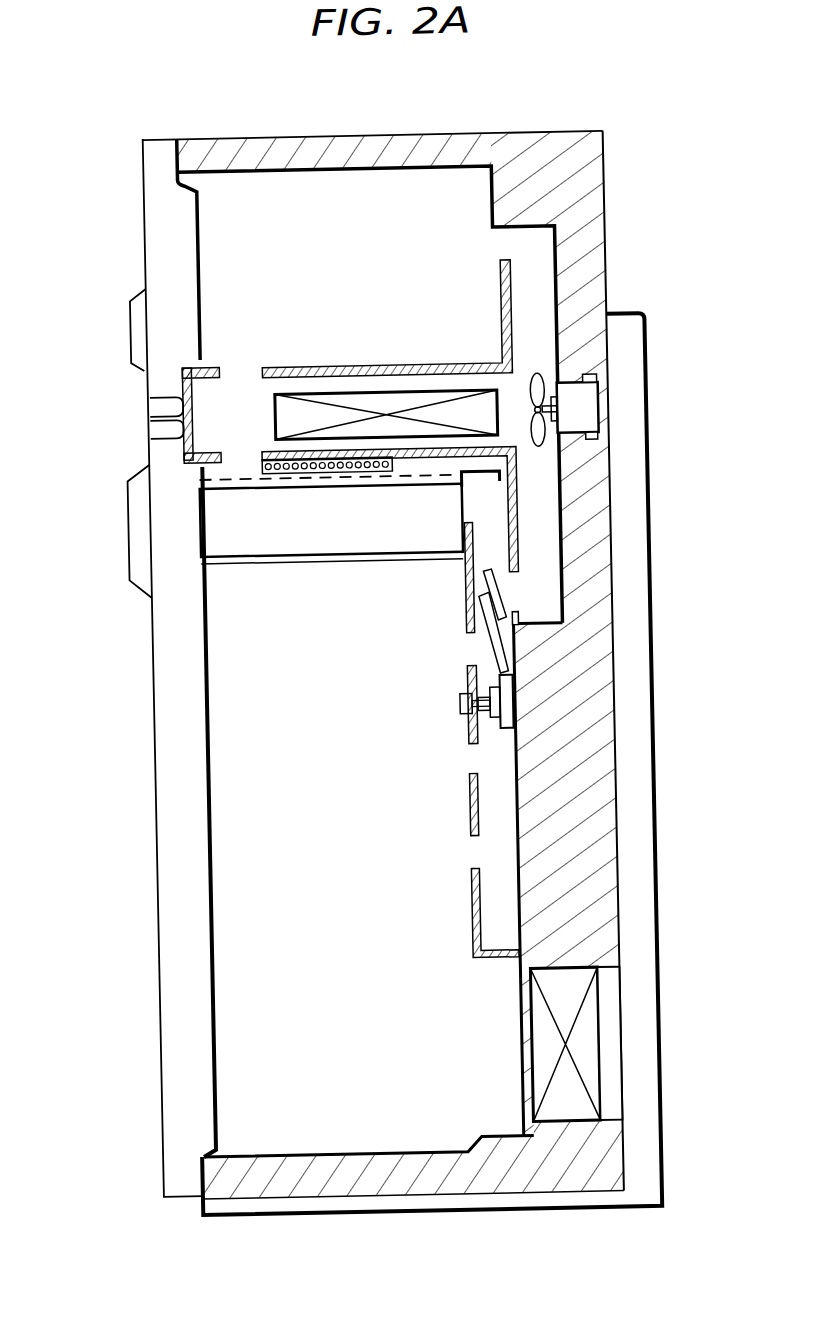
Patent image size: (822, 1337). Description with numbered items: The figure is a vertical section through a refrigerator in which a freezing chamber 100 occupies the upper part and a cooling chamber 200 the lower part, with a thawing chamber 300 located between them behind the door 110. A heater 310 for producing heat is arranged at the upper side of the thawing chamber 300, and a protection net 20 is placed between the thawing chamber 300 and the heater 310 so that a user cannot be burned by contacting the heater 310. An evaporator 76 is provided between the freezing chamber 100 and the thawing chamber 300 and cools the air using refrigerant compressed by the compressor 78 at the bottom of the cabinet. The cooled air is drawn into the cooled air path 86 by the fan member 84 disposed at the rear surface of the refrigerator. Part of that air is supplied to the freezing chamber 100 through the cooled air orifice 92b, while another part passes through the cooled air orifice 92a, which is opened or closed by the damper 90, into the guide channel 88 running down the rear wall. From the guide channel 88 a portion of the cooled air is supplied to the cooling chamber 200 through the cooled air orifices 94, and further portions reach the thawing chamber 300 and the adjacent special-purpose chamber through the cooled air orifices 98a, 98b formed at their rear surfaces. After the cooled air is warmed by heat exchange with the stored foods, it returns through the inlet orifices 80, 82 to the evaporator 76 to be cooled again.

The freezing chamber 100 is at (231, 200).
The cooled air orifice 92b is at (503, 242).
The inlet orifice 80 is at (244, 345).
The evaporator 76 is at (278, 400).
The inlet orifice 82 is at (234, 438).
The protection net 20 is at (230, 477).
The heater 310 is at (266, 478).
The thawing chamber 300 is at (462, 506).
The cooled air orifice 98a is at (466, 530).
The cooled air orifice 98b is at (282, 750).
The door 110 is at (172, 699).
The cooled air orifice 94 is at (460, 652).
The cooling chamber 200 is at (225, 817).
The fan member 84 is at (585, 404).
The cooled air path 86 is at (543, 510).
The damper 90 is at (500, 593).
The cooled air orifice 92a is at (531, 600).
The guide channel 88 is at (497, 799).
The compressor 78 is at (577, 1047).